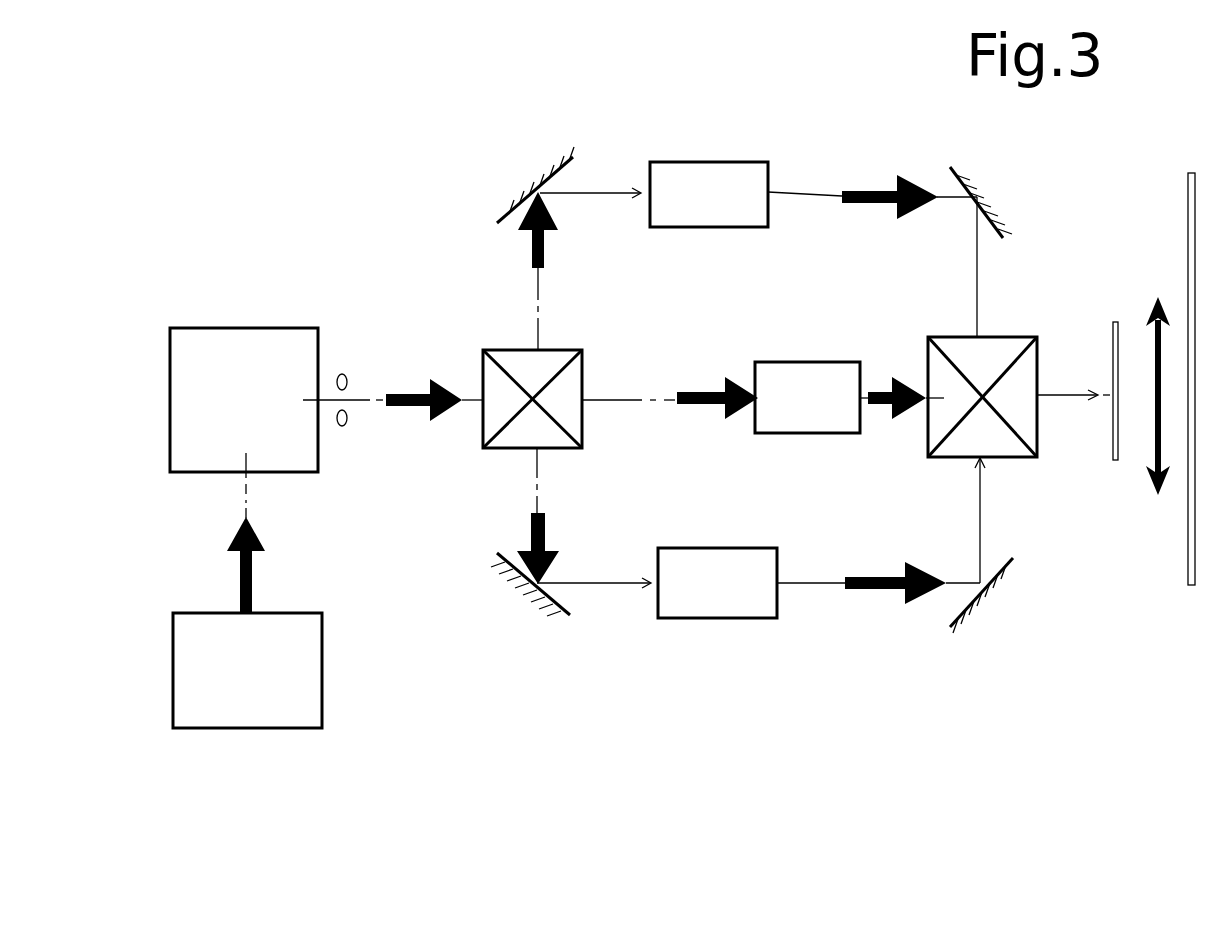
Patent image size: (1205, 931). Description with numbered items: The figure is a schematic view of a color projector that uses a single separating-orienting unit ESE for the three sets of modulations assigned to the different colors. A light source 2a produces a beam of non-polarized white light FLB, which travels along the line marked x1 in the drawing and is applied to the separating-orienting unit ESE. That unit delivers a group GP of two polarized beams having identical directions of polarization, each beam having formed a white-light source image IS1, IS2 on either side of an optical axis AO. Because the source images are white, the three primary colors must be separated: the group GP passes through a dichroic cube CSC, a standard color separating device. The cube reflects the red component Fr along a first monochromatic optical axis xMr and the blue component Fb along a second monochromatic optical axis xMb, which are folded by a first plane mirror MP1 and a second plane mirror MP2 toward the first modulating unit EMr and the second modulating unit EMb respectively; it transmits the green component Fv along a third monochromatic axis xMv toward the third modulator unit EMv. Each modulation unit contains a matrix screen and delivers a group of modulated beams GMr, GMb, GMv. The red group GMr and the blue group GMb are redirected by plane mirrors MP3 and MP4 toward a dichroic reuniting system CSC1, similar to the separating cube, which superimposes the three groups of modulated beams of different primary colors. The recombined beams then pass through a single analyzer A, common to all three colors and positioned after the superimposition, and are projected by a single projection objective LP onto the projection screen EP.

The separating-orienting unit ESE is at (238, 328).
The source image IS2 is at (342, 374).
The source image IS1 is at (342, 426).
The optical axis AO is at (375, 402).
The group of two polarized beams GP is at (388, 396).
The control signal line x1 is at (246, 490).
The beam of non-polarized white light FLB is at (241, 572).
The light source 2a is at (260, 728).
The dichroic cube CSC is at (520, 350).
The first monochromatic optical axis xMr is at (540, 316).
The red color beam Fr is at (545, 256).
The first plane mirror MP1 is at (500, 216).
The first modulating unit EMr is at (724, 162).
The group of modulated beams GMr is at (868, 186).
The plane mirror MP3 is at (996, 202).
The third monochromatic axis xMv is at (602, 402).
The green color beam Fv is at (706, 392).
The third modulator unit EMv is at (780, 433).
The group of modulated beams GMv is at (880, 386).
The dichroic system CSC1 is at (968, 460).
The analyzer A is at (1115, 460).
The projection objective LP is at (1150, 500).
The projection screen EP is at (1190, 585).
The second monochromatic optical axis xMb is at (536, 476).
The blue color beam Fb is at (546, 540).
The second plane mirror MP2 is at (498, 562).
The second modulating unit EMb is at (688, 618).
The group of modulated beams GMb is at (888, 590).
The plane mirror MP4 is at (990, 594).